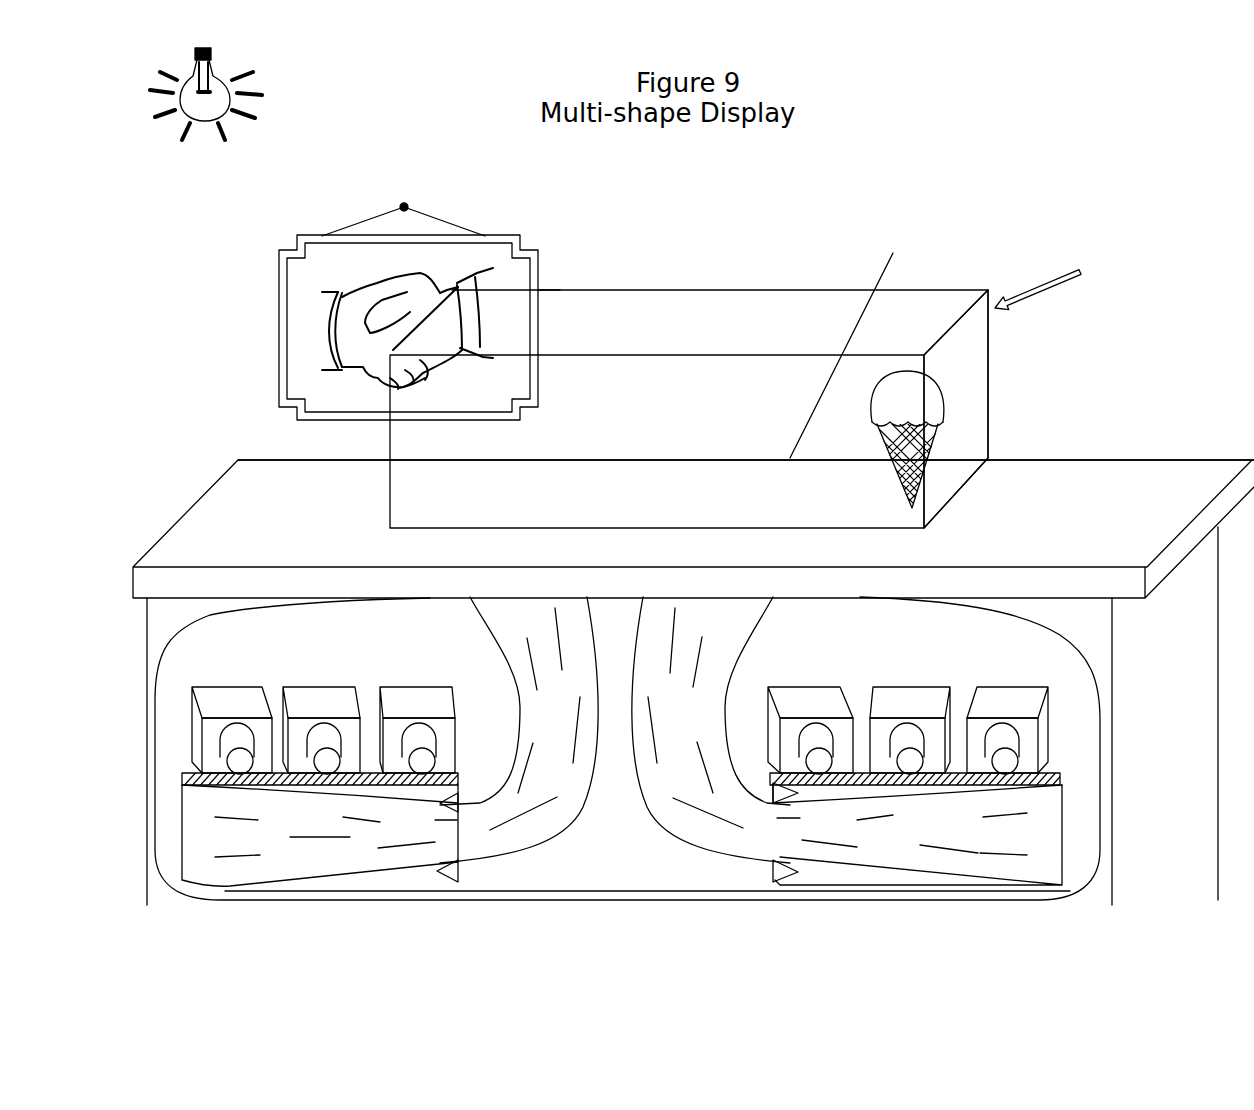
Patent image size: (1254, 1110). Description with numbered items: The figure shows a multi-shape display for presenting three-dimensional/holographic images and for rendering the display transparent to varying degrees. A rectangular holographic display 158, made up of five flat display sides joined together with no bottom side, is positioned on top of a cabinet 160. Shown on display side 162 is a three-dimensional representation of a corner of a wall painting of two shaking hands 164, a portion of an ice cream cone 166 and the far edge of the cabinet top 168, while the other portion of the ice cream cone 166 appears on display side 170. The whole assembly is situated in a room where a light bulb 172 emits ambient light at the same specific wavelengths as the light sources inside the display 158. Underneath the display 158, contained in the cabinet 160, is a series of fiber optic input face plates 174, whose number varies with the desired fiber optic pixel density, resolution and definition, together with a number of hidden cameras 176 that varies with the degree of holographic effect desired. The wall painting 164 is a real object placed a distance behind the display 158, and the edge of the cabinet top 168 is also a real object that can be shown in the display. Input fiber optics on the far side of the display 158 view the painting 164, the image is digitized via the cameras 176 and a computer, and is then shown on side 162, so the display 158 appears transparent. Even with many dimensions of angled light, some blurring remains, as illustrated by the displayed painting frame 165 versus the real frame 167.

The rectangular holographic display 158 is at (1063, 278).
The cabinet 160 is at (1042, 505).
The display side 162 is at (690, 395).
The wall painting of two shaking hands 164 is at (428, 290).
The painting's frame (displayed image) 165 is at (540, 300).
The ice cream cone 166 is at (897, 395).
The painting's frame (real object) 167 is at (527, 250).
The far edge of the cabinet top 168 is at (267, 458).
The display side 170 is at (967, 360).
The light bulb 172 is at (205, 93).
The fiber optic input face plates 174 is at (785, 866).
The cameras 176 is at (437, 710).